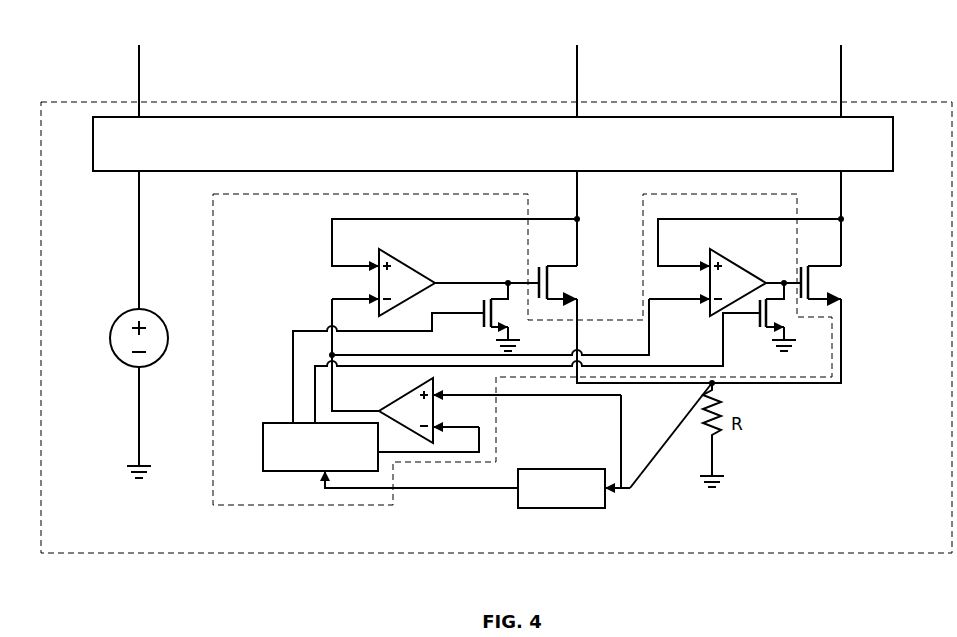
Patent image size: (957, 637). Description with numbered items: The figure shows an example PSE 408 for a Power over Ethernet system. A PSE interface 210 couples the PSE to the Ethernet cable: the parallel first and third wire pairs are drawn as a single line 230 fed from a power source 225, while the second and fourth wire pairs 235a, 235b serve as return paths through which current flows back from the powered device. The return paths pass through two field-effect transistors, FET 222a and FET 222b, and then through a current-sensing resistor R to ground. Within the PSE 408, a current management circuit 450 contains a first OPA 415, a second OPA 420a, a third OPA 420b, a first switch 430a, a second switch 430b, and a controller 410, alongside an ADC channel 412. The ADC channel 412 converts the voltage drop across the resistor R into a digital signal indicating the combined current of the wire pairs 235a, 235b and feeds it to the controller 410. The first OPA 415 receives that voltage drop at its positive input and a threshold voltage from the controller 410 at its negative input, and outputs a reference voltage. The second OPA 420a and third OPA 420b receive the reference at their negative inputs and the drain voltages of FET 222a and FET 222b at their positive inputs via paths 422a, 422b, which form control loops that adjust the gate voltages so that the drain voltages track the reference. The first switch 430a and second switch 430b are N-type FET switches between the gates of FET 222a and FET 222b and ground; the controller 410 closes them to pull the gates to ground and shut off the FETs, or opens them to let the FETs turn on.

The PSE interface 210 is at (866, 171).
The FET 222a is at (580, 286).
The FET 222b is at (838, 278).
The power source 225 is at (143, 310).
The single line 230 is at (139, 86).
The second wire pair 235a is at (577, 86).
The fourth wire pair 235b is at (841, 86).
The PSE 408 is at (720, 553).
The controller 410 is at (278, 422).
The ADC channel 412 is at (570, 508).
The first operational amplifier 415 is at (420, 384).
The second operational amplifier 420a is at (410, 262).
The third operational amplifier 420b is at (725, 253).
The path 422a is at (408, 218).
The path 422b is at (688, 218).
The first switch 430a is at (513, 320).
The second switch 430b is at (781, 313).
The current management circuit 450 is at (447, 194).